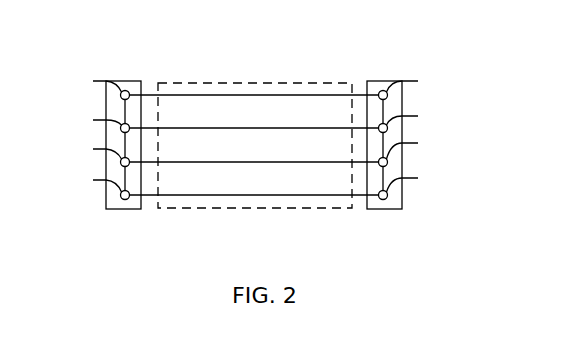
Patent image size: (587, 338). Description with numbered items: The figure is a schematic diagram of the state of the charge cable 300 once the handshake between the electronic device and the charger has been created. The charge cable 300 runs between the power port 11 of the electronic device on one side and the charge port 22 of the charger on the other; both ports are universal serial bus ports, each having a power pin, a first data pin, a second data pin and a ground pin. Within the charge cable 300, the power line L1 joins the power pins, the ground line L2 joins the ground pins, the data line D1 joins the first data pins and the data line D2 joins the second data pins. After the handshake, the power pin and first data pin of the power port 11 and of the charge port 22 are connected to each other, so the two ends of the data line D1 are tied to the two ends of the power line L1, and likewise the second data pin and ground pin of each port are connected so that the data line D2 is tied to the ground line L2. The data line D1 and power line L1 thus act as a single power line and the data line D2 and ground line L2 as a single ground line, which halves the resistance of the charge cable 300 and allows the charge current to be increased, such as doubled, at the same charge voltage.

The charge port 22 is at (118, 81).
The power port 11 is at (383, 81).
The charge cable 300 is at (215, 83).
The power line L1 is at (263, 95).
The ground line L2 is at (262, 195).
The data line D1 is at (307, 128).
The data line D2 is at (300, 162).